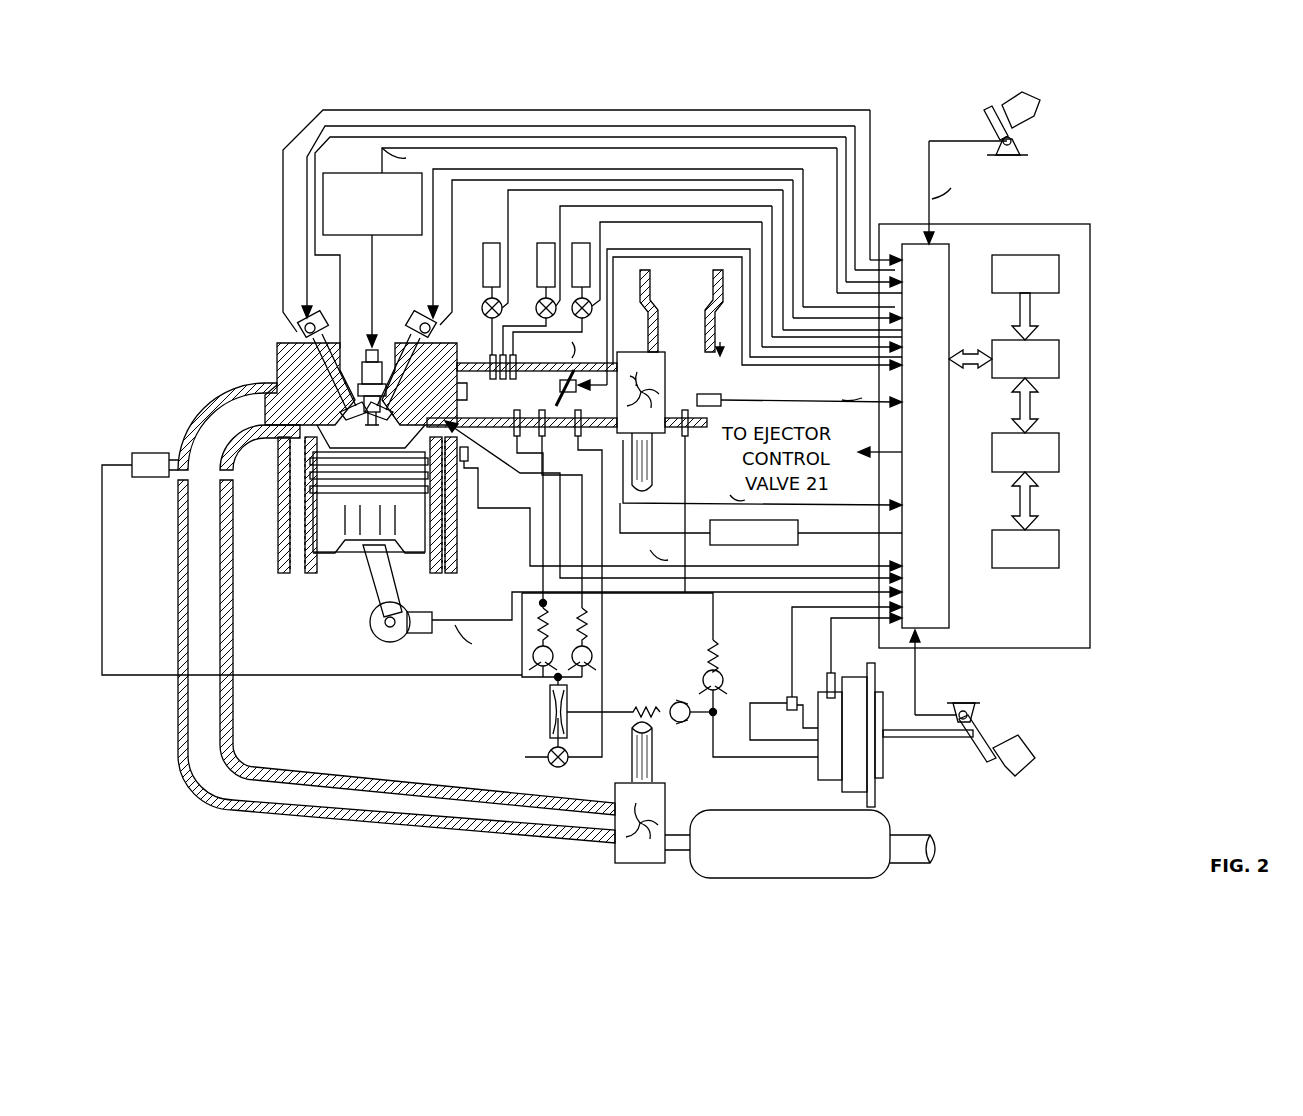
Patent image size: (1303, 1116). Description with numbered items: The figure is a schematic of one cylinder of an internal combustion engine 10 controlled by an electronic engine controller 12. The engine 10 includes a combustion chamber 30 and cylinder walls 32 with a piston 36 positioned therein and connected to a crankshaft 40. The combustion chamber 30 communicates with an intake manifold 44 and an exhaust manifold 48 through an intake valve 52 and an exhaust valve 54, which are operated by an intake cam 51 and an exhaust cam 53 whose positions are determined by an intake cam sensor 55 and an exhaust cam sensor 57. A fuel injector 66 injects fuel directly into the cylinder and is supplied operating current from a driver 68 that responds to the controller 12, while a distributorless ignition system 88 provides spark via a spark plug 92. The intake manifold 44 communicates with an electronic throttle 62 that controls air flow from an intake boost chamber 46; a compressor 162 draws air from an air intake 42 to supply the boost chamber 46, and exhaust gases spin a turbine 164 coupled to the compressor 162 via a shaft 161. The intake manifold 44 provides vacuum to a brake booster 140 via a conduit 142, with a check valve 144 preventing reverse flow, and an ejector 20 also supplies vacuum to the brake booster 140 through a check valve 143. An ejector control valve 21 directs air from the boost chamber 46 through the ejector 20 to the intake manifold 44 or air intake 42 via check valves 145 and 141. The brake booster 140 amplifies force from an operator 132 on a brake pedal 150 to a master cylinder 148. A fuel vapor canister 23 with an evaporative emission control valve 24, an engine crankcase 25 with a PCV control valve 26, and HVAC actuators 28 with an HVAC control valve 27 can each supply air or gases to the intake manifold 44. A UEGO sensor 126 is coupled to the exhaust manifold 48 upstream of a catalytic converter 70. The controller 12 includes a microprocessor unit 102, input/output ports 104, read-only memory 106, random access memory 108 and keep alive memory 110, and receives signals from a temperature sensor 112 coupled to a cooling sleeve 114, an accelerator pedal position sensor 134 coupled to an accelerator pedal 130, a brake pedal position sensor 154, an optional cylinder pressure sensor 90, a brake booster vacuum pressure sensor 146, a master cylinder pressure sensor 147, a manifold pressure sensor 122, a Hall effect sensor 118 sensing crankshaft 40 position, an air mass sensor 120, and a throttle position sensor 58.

The internal combustion engine 10 is at (218, 303).
The electronic engine controller 12 is at (1090, 224).
The ejector 20 is at (550, 704).
The ejector control valve 21 is at (565, 768).
The fuel vapor canister 23 is at (541, 243).
The evaporative emission control valve 24 is at (539, 304).
The engine crankcase 25 is at (490, 243).
The PCV control valve 26 is at (485, 305).
The HVAC control valve 27 is at (594, 322).
The HVAC actuators 28 is at (581, 243).
The combustion chamber 30 is at (282, 535).
The cylinder walls 32 is at (315, 578).
The piston 36 is at (355, 568).
The crankshaft 40 is at (378, 640).
The air intake 42 is at (754, 317).
The intake manifold 44 is at (537, 378).
The intake boost chamber 46 is at (567, 415).
The exhaust manifold 48 is at (239, 426).
The intake cam 51 is at (428, 316).
The intake valve 52 is at (462, 392).
The exhaust cam 53 is at (318, 318).
The exhaust valve 54 is at (285, 383).
The intake cam sensor 55 is at (436, 326).
The exhaust cam sensor 57 is at (300, 327).
The throttle position sensor 58 is at (587, 349).
The electronic throttle 62 is at (556, 362).
The fuel injector 66 is at (470, 455).
The driver 68 is at (710, 545).
The catalytic converter 70 is at (710, 878).
The distributorless ignition system 88 is at (340, 173).
The pressure sensor 90 is at (348, 340).
The spark plug 92 is at (384, 340).
The microprocessor unit 102 is at (1059, 358).
The input/output ports 104 is at (949, 268).
The read-only memory 106 is at (1059, 275).
The random access memory 108 is at (1059, 452).
The keep alive memory 110 is at (1059, 548).
The temperature sensor 112 is at (468, 480).
The cooling sleeve 114 is at (452, 540).
The Hall effect sensor 118 is at (425, 640).
The air mass sensor 120 is at (721, 397).
The pressure sensor 122 is at (548, 398).
The UEGO sensor 126 is at (132, 455).
The accelerator pedal 130 is at (992, 124).
The operator 132 is at (1042, 100).
The accelerator pedal position sensor 134 is at (1025, 141).
The brake booster 140 is at (818, 782).
The check valve 141 is at (592, 648).
The conduit 142 is at (713, 605).
The check valve 143 is at (675, 703).
The check valve 144 is at (722, 668).
The check valve 145 is at (533, 672).
The pressure sensor 146 is at (852, 662).
The pressure sensor 147 is at (797, 700).
The master cylinder 148 is at (762, 703).
The brake pedal 150 is at (980, 764).
The brake pedal position sensor 154 is at (956, 708).
The shaft 161 is at (666, 462).
The compressor 162 is at (650, 352).
The turbine 164 is at (680, 770).